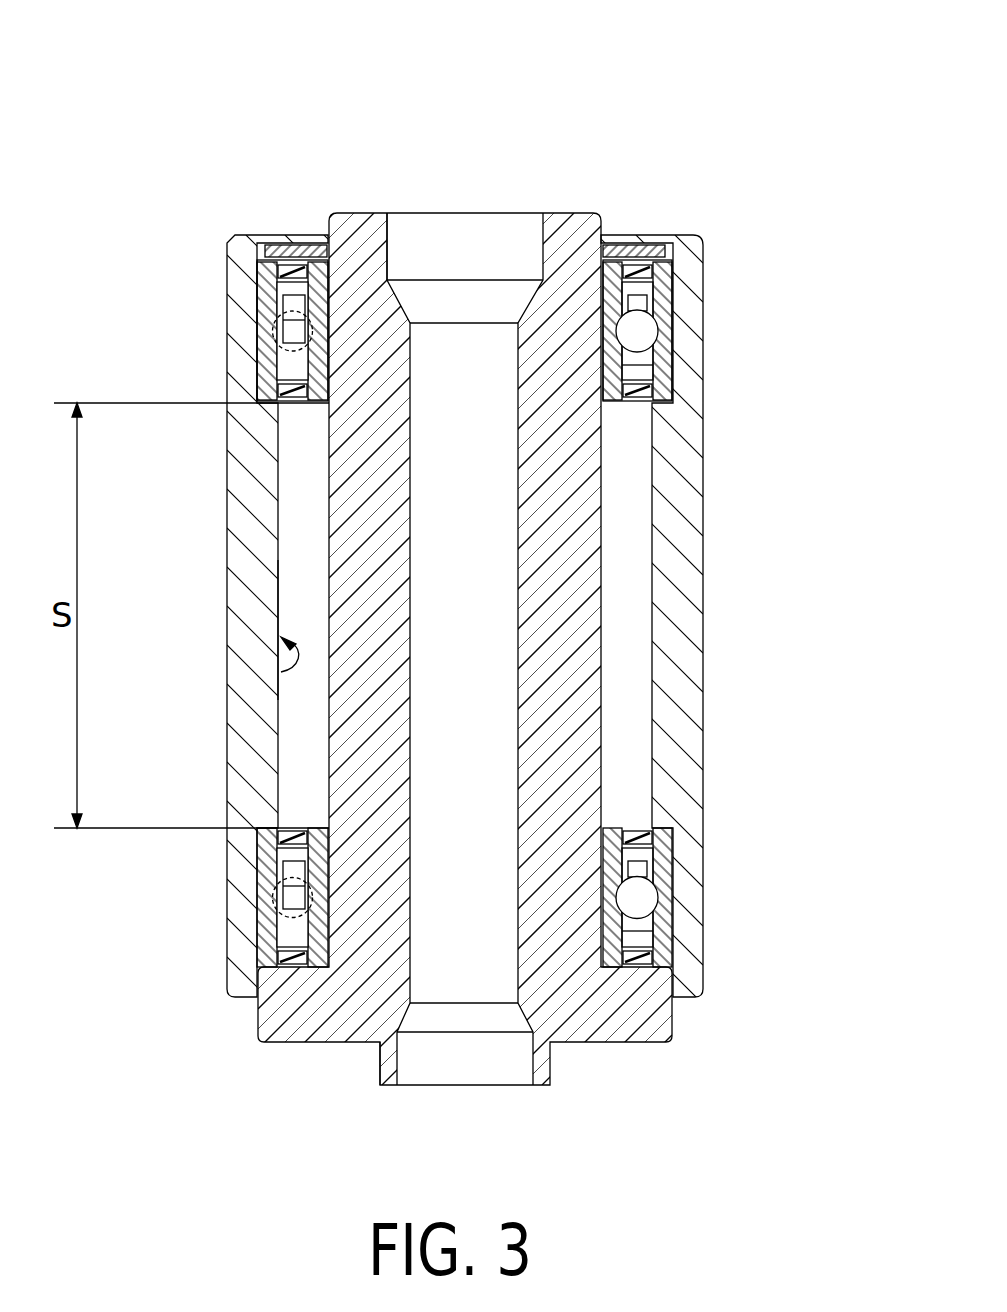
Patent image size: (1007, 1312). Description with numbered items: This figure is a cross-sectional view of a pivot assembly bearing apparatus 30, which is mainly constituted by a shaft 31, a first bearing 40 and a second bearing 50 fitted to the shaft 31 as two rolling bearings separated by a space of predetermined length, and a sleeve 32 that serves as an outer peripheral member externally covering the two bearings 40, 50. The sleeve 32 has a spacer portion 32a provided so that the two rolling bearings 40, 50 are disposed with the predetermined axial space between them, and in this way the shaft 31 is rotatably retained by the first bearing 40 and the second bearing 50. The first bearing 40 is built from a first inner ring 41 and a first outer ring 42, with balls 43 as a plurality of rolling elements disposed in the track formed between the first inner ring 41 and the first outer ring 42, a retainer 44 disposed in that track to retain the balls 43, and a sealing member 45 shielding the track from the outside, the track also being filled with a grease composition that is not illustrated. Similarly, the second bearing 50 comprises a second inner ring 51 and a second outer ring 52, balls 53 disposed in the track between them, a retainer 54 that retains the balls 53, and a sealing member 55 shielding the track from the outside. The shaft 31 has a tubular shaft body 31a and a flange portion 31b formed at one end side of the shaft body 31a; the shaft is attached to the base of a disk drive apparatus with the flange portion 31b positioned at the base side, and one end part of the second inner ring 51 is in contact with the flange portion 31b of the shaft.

The pivot assembly bearing apparatus 30 is at (735, 98).
The shaft 31 is at (570, 245).
The tubular shaft body 31a is at (360, 295).
The flange portion 31b is at (332, 1038).
The sleeve 32 is at (241, 561).
The spacer portion 32a is at (281, 673).
The first bearing 40 is at (542, 295).
The first inner ring 41 is at (657, 350).
The first outer ring 42 is at (617, 367).
The balls 43 is at (640, 327).
The retainer 44 is at (633, 302).
The sealing member 45 is at (655, 260).
The second bearing 50 is at (540, 963).
The second inner ring 51 is at (610, 863).
The second outer ring 52 is at (660, 873).
The balls 53 is at (640, 898).
The retainer 54 is at (640, 928).
The sealing member 55 is at (660, 945).